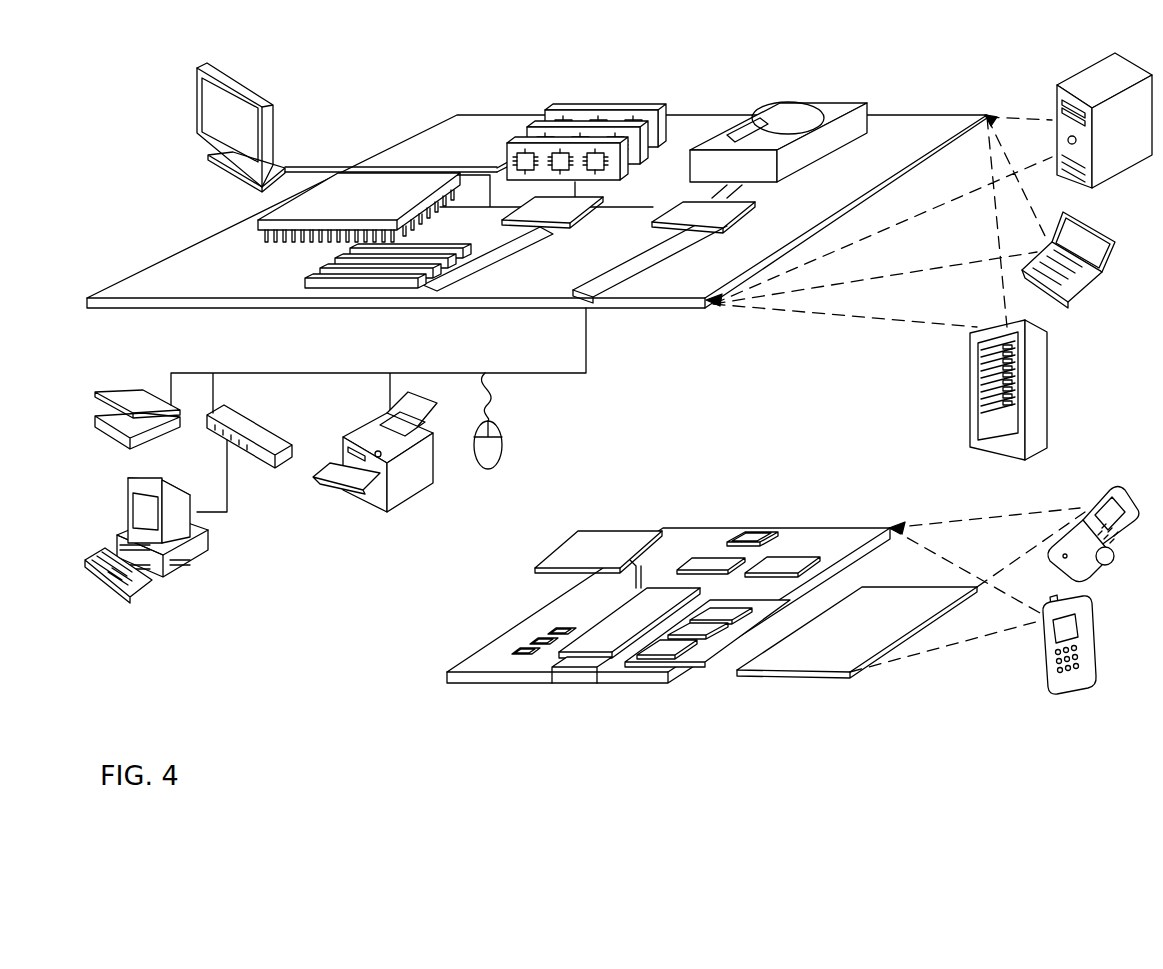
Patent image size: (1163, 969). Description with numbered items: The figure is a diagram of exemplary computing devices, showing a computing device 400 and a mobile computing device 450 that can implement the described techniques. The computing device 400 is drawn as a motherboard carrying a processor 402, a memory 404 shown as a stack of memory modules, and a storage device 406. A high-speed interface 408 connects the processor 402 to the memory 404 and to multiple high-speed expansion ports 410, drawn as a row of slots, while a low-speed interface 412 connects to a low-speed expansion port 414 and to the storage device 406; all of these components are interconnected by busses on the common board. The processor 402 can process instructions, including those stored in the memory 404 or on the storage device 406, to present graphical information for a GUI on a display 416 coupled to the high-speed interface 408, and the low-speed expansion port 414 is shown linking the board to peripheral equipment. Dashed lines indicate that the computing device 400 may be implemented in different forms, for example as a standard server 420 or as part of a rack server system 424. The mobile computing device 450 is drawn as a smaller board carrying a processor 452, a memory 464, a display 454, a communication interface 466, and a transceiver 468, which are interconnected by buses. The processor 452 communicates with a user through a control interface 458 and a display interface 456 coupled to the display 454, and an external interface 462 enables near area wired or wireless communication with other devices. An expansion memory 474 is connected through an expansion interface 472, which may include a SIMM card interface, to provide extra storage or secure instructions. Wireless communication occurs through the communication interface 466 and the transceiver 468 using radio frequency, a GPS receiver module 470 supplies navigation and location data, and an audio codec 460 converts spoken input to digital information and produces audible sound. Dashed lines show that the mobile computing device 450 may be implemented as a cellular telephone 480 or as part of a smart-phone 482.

The computing device 400 is at (372, 90).
The processor 402 is at (258, 224).
The memory 404 is at (550, 108).
The storage device 406 is at (760, 100).
The high-speed interface 408 is at (532, 207).
The high-speed expansion ports 410 is at (327, 277).
The low-speed interface 412 is at (687, 207).
The low-speed expansion port 414 is at (597, 300).
The display 416 is at (197, 68).
The standard server 420 is at (1055, 103).
The rack server system 424 is at (970, 410).
The mobile computing device 450 is at (431, 681).
The processor 452 is at (607, 645).
The display 454 is at (818, 662).
The display interface 456 is at (678, 655).
The control interface 458 is at (715, 632).
The audio codec 460 is at (720, 612).
The external interface 462 is at (575, 677).
The memory 464 is at (527, 635).
The communication interface 466 is at (717, 562).
The transceiver 468 is at (783, 563).
The GPS receiver module 470 is at (755, 532).
The expansion interface 472 is at (658, 540).
The expansion memory 474 is at (583, 539).
The cellular telephone 480 is at (1090, 493).
The smart-phone 482 is at (1043, 648).